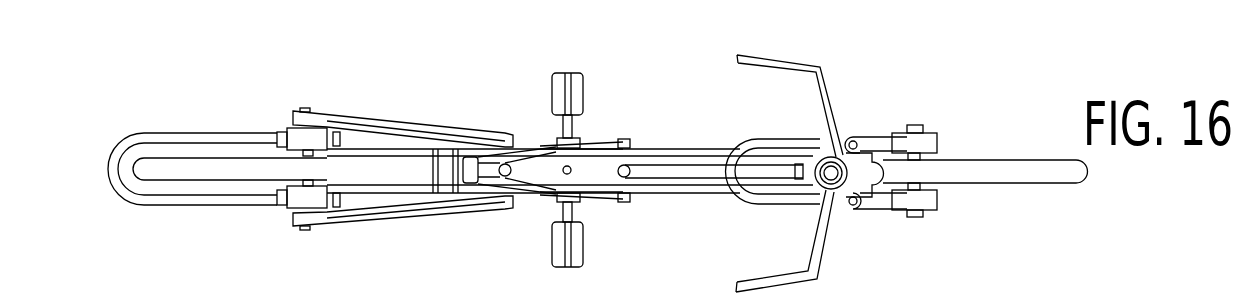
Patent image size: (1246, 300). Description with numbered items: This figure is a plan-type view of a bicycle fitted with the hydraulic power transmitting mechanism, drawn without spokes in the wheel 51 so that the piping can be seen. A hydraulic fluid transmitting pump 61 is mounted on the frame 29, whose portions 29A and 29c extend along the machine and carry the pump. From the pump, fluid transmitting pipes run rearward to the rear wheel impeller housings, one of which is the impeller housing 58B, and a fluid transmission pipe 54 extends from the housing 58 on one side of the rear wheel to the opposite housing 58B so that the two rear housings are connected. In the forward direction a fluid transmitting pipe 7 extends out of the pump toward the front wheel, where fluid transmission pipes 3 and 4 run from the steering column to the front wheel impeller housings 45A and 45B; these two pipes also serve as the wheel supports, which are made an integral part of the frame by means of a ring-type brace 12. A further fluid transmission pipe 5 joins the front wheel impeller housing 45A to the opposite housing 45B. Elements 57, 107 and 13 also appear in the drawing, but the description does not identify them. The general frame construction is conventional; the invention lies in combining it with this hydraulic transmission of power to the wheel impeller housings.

The wheel 51 is at (165, 163).
The fluid transmission pipe 54 is at (152, 207).
The rear wheel impeller housing 58B is at (292, 128).
The rear wheel impeller housing 58 is at (292, 209).
The lower arm 57 is at (340, 202).
The frame 29 is at (463, 208).
The hydraulic fluid transmitting pump 61 is at (540, 163).
The rollers 107 is at (585, 76).
The frame 29c is at (612, 139).
The frame 29A is at (667, 195).
The fluid transmitting pipe 7 is at (677, 163).
The fluid transmission pipe 5 is at (785, 206).
The upper fork arm 13 is at (850, 120).
The ring-type brace 12 is at (857, 213).
The fluid transmission pipe 4 is at (873, 134).
The fluid transmission pipe 3 is at (883, 209).
The front wheel impeller housing 45B is at (923, 128).
The front wheel impeller housing 45A is at (937, 207).